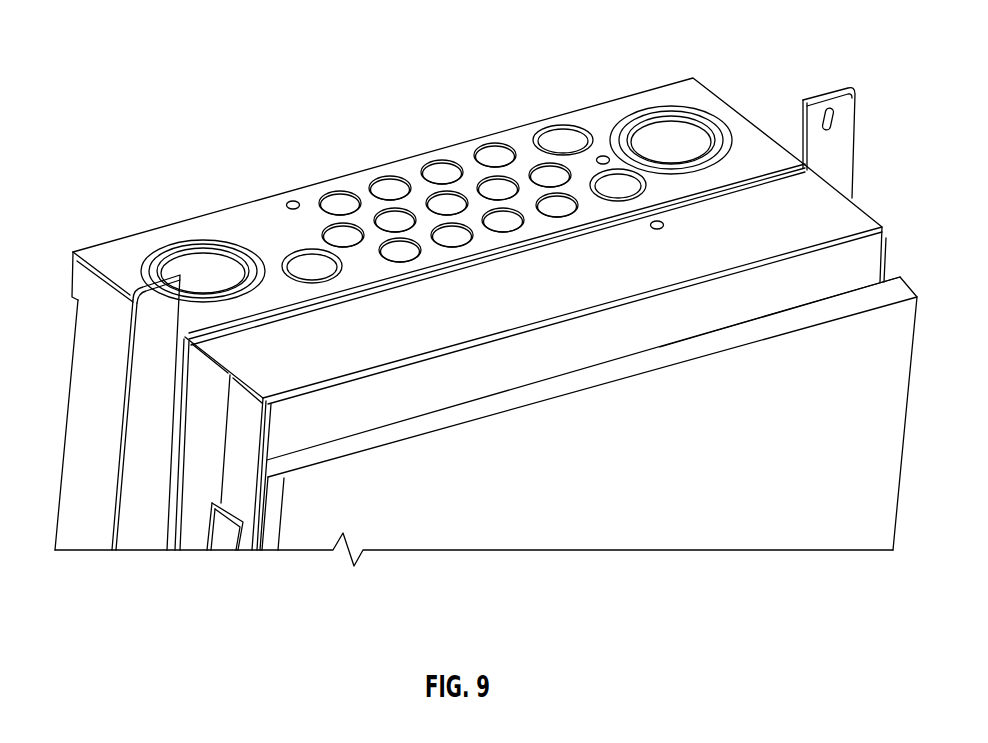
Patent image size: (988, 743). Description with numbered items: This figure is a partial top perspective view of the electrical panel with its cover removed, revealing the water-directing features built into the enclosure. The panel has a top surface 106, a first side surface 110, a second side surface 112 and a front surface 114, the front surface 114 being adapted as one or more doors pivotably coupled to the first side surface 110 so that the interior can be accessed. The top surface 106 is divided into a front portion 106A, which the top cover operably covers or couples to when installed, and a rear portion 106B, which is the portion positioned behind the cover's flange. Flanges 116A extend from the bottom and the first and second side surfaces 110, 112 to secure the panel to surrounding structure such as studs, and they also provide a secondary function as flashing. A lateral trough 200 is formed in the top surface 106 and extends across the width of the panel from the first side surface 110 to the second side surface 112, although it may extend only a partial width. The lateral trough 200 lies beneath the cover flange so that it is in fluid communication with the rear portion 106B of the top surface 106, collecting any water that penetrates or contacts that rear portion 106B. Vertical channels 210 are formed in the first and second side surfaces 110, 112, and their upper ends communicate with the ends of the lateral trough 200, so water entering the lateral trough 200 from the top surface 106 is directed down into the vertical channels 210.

The lateral trough 200 is at (698, 76).
The second side surface 112 is at (765, 128).
The flange 116A is at (153, 410).
The front portion of the top surface 106A is at (822, 217).
The top surface 106 is at (528, 205).
The rear portion of the top surface 106B is at (231, 222).
The first side surface 110 is at (100, 366).
The front surface 114 is at (878, 479).
The vertical channel 210 is at (176, 514).